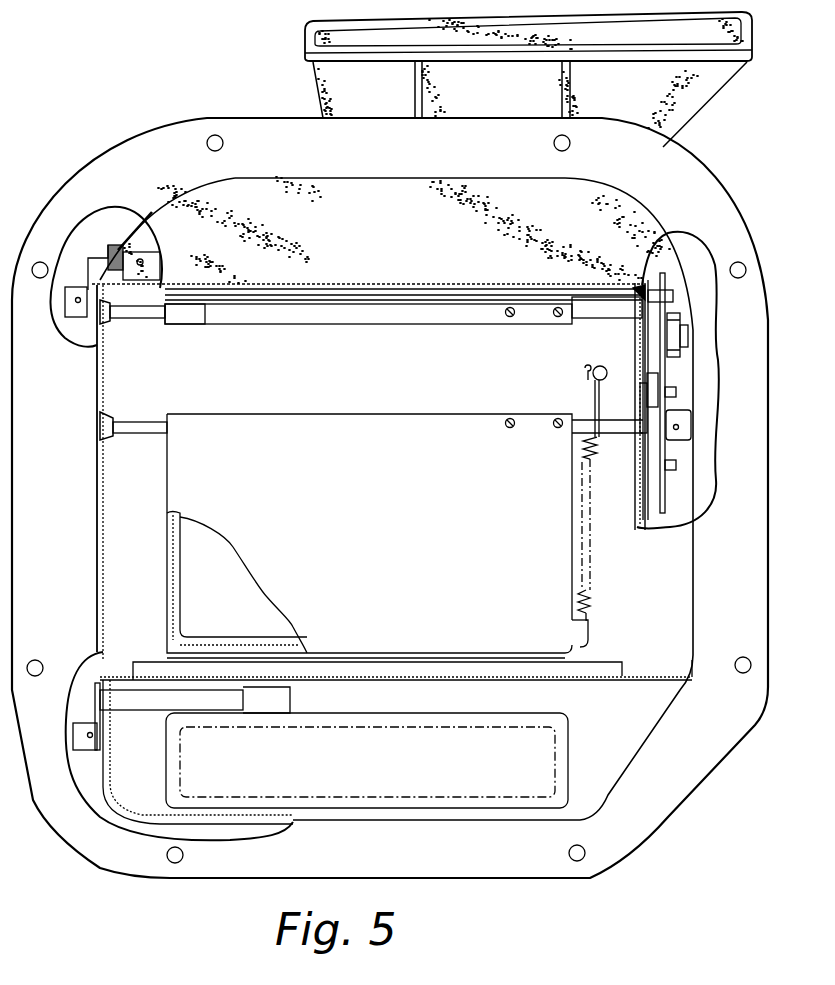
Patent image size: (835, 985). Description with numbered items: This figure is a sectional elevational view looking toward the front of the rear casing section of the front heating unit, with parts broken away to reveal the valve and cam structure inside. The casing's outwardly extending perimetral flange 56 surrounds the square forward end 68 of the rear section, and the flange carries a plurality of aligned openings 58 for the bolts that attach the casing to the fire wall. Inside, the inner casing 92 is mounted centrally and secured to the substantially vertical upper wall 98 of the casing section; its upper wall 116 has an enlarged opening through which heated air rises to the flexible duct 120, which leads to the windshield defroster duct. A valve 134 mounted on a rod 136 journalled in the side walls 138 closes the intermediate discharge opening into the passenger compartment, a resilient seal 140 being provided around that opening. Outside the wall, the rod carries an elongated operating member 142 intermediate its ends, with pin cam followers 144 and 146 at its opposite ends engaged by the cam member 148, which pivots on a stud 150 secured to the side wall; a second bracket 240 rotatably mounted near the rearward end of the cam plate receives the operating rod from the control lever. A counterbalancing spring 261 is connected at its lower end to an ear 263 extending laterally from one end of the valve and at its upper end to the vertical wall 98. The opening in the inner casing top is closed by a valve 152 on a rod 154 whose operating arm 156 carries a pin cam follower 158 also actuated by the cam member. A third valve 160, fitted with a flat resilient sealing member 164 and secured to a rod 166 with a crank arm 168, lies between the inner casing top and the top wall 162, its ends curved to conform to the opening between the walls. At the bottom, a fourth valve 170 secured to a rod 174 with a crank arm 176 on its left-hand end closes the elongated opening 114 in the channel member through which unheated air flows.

The perimetral flange 56 is at (97, 845).
The aligned openings 58 is at (172, 863).
The forward end of rear section 68 is at (680, 760).
The inner casing 92 is at (148, 675).
The vertical upper wall 98 is at (320, 350).
The elongated opening 114 is at (572, 747).
The upper wall of inner casing 116 is at (203, 303).
The flexible duct 120 is at (697, 83).
The valve 134 is at (185, 459).
The rod 136 is at (585, 422).
The side walls 138 is at (99, 392).
The resilient seal 140 is at (178, 587).
The elongated operating member 142 is at (632, 457).
The pin cam follower 144 is at (674, 468).
The pin cam follower 146 is at (673, 390).
The cam member 148 is at (663, 500).
The stud 150 is at (684, 337).
The valve 152 is at (415, 292).
The rod 154 is at (585, 308).
The operating arm 156 is at (653, 261).
The pin cam follower 158 is at (668, 292).
The third valve 160 is at (147, 282).
The top wall 162 is at (137, 228).
The flat resilient sealing member 164 is at (273, 205).
The rod 166 is at (103, 262).
The crank arm 168 is at (76, 328).
The fourth valve 170 is at (190, 775).
The rod 174 is at (128, 711).
The crank arm 176 is at (90, 730).
The second bracket 240 is at (683, 430).
The counterbalancing spring 261 is at (588, 588).
The ear 263 is at (582, 622).